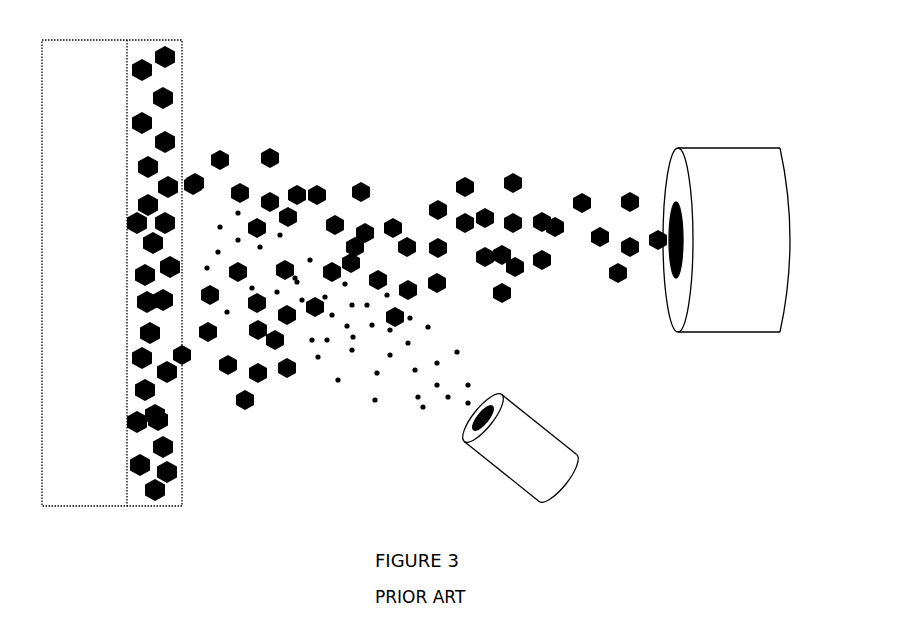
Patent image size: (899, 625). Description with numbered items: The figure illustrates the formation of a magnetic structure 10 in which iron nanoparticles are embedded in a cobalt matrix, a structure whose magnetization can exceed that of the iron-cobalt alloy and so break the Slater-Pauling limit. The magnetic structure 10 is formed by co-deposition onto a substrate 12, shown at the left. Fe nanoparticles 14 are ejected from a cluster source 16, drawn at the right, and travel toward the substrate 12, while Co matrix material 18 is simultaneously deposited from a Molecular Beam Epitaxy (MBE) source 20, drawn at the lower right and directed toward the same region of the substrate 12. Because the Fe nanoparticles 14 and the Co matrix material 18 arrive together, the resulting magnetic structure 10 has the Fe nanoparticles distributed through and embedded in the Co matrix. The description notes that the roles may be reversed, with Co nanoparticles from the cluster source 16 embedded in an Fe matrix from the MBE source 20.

The magnetic structure 10 is at (138, 487).
The substrate 12 is at (58, 480).
The Fe nanoparticles 14 is at (467, 202).
The cluster source 16 is at (772, 193).
The Co matrix material 18 is at (355, 385).
The Molecular Beam Epitaxy (MBE) source 20 is at (530, 478).